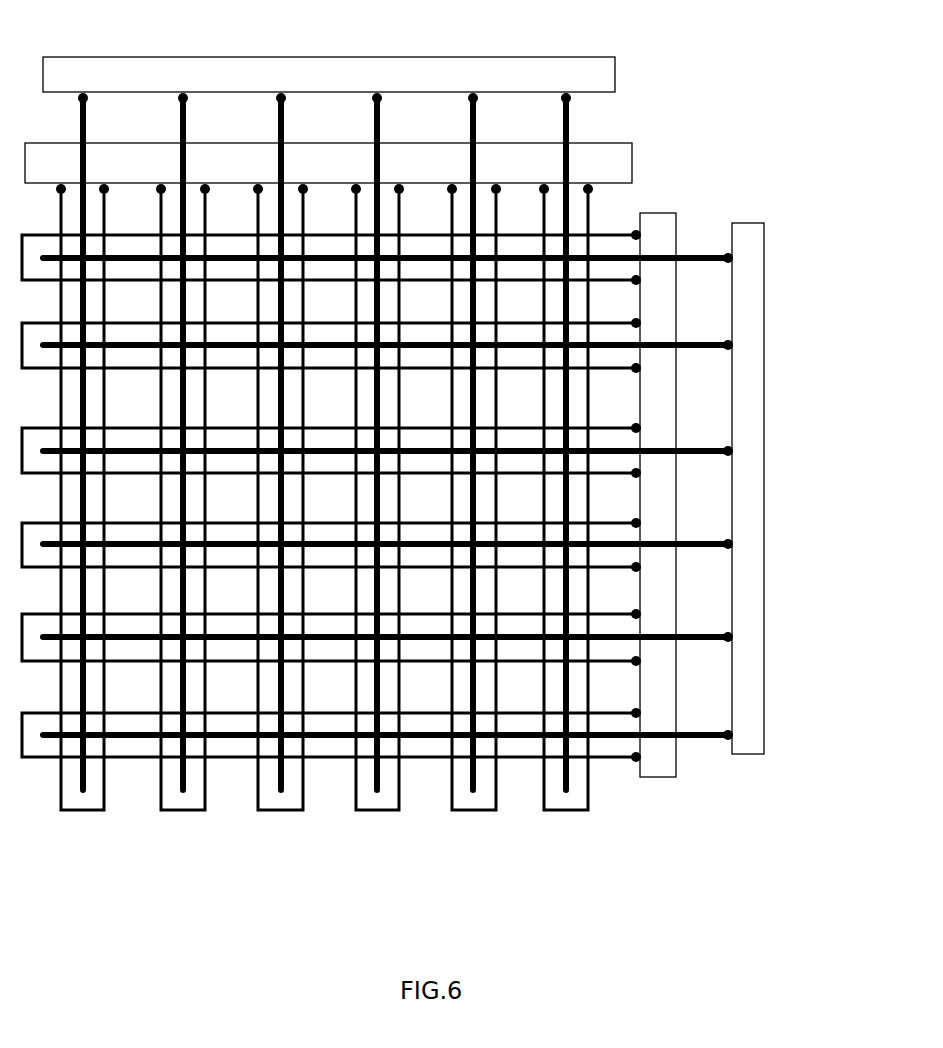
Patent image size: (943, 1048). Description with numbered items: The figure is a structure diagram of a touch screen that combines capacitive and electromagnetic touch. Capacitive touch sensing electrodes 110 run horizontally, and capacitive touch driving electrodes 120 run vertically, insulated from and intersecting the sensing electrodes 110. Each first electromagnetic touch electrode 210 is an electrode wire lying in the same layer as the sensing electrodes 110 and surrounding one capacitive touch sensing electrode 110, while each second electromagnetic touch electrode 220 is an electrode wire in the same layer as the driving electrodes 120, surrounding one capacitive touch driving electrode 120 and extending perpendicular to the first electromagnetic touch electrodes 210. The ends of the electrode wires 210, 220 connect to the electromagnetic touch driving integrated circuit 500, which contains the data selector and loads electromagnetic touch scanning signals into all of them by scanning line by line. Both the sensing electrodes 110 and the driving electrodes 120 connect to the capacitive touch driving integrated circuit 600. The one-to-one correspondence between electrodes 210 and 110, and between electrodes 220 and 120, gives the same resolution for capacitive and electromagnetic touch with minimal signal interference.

The capacitive touch sensing electrodes 110 is at (217, 740).
The capacitive touch driving electrodes 120 is at (474, 771).
The first electromagnetic touch electrodes 210 is at (128, 759).
The second electromagnetic touch electrodes 220 is at (458, 813).
The electromagnetic touch driving integrated circuit 500 is at (389, 470).
The capacitive touch driving integrated circuit 600 is at (810, 626).